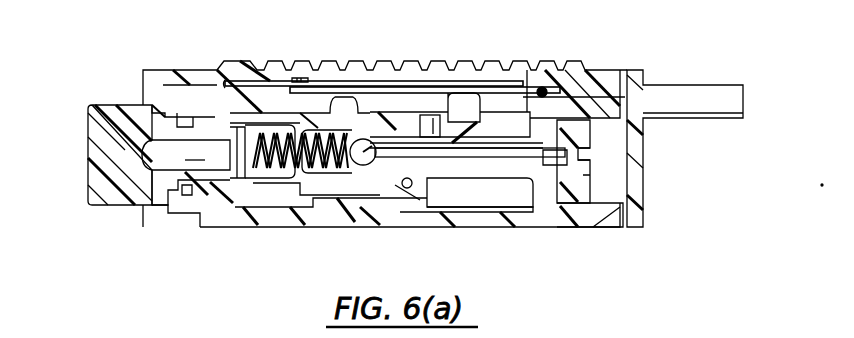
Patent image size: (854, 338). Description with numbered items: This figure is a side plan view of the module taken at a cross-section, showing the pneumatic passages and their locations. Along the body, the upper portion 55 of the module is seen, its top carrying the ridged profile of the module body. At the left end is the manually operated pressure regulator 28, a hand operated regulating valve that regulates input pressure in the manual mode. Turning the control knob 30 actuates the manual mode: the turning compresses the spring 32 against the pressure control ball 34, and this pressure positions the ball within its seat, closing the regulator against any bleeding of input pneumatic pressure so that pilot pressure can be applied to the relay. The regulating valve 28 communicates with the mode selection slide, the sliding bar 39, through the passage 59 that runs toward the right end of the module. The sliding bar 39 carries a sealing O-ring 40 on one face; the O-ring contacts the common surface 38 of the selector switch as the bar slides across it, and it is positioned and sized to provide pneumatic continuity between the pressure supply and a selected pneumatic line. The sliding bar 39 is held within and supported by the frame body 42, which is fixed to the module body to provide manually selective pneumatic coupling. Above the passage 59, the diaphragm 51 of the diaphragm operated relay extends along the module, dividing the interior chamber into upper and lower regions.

The manually operated pressure regulator 28 is at (168, 173).
The control knob 30 is at (116, 105).
The spring 32 is at (265, 175).
The pressure control ball 34 is at (363, 160).
The common surface 38 is at (580, 147).
The sliding bar 39 is at (583, 177).
The sealing O-ring 40 is at (556, 168).
The frame body 42 is at (647, 160).
The diaphragm 51 is at (315, 80).
The upper portion of the module 55 is at (489, 62).
The passage 59 is at (503, 158).